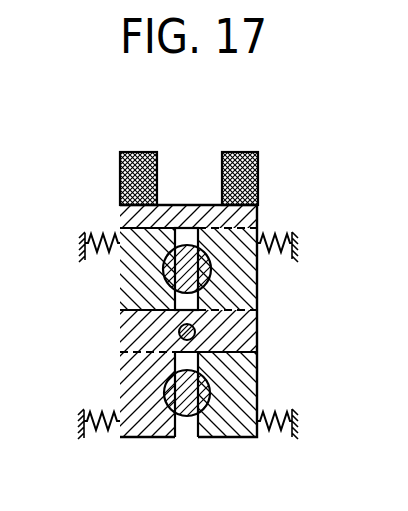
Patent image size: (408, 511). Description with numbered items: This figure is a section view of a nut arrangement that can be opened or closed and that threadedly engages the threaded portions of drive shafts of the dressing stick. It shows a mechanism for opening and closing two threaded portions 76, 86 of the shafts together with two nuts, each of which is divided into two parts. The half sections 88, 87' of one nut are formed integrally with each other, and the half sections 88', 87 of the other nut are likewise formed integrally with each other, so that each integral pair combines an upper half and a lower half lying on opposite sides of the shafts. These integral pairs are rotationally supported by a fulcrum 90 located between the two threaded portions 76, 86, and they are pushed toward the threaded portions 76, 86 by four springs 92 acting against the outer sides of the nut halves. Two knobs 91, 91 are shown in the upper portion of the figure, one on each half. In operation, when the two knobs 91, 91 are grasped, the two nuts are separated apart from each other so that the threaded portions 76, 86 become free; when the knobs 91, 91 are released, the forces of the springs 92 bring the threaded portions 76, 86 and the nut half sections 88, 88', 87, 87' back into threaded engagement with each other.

The knob 91 is at (222, 152).
The spring 92 is at (100, 233).
The half section of nut 88' is at (108, 269).
The half section of nut 88 is at (271, 269).
The threaded portion 86 is at (170, 282).
The fulcrum 90 is at (196, 332).
The half section of nut 87' is at (109, 394).
The half section of nut 87 is at (270, 394).
The threaded portion 76 is at (180, 417).